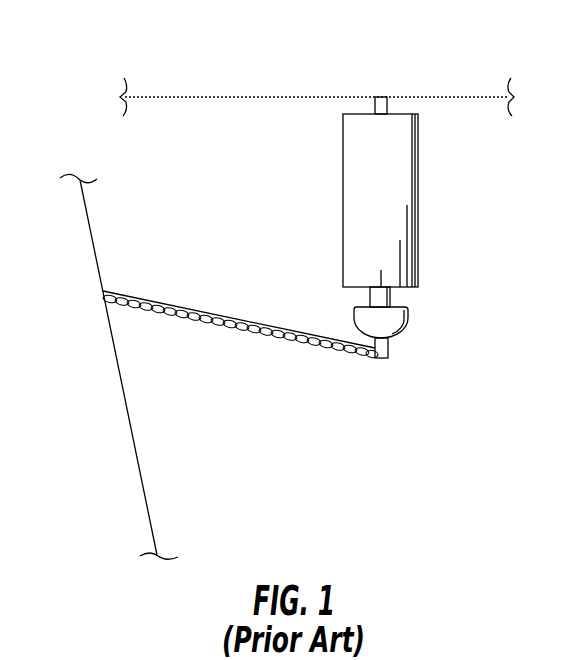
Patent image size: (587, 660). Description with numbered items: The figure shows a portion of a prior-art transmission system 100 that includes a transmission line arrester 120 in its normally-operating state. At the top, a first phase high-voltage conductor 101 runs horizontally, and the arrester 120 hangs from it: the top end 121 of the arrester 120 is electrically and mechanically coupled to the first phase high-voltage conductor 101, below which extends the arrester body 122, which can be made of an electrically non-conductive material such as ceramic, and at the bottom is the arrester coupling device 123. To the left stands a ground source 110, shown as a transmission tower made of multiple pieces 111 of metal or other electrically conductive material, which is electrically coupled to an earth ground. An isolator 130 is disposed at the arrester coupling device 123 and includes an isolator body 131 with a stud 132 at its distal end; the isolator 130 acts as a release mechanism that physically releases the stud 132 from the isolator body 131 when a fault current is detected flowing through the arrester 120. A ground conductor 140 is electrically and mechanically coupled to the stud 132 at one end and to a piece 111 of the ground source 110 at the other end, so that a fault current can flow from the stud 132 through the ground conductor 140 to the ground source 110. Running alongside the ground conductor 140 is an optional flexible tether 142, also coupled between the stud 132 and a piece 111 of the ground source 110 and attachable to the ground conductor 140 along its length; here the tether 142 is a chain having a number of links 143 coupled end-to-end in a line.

The transmission system 100 is at (117, 49).
The first phase high-voltage conductor 101 is at (232, 96).
The ground source 110 is at (108, 354).
The pieces 111 is at (130, 425).
The transmission line arrester 120 is at (462, 203).
The top end 121 is at (388, 106).
The arrester body 122 is at (343, 200).
The arrester coupling device 123 is at (369, 301).
The isolator 130 is at (423, 323).
The isolator body 131 is at (409, 312).
The stud 132 is at (389, 348).
The ground conductor 140 is at (176, 304).
The tether 142 is at (207, 330).
The links 143 is at (311, 351).